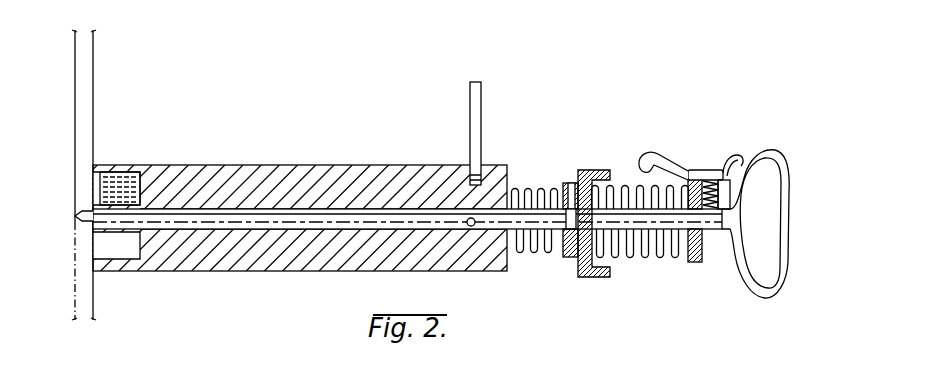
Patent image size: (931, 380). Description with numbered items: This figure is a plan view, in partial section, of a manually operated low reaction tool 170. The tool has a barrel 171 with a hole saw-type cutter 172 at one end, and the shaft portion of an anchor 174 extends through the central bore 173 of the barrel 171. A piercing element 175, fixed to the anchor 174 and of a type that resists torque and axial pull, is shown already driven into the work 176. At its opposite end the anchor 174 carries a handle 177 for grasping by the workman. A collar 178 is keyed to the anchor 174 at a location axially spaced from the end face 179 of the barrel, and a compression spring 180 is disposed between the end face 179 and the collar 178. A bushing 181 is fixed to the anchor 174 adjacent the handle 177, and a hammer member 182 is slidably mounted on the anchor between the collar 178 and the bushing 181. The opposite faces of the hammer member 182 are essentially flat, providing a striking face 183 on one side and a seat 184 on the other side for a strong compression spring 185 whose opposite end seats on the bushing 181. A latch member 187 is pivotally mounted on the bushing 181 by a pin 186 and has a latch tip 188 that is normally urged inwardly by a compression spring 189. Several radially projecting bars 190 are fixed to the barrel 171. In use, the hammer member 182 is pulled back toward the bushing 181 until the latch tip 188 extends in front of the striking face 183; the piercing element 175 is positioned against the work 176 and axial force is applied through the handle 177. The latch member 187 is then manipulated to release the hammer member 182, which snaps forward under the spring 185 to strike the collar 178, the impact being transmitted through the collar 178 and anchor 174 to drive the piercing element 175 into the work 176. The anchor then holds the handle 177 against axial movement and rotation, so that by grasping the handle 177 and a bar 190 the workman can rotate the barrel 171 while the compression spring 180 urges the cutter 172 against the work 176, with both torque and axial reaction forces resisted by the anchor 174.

The manually operated low reaction tool 170 is at (302, 163).
The barrel 171 is at (215, 268).
The hole saw-type cutter 172 is at (115, 165).
The central bore 173 is at (213, 228).
The anchor 174 is at (287, 223).
The piercing element 175 is at (76, 216).
The work 176 is at (82, 296).
The handle 177 is at (788, 182).
The collar 178 is at (566, 186).
The end face 179 is at (517, 266).
The compression spring 180 is at (524, 190).
The bushing 181 is at (702, 252).
The hammer member 182 is at (592, 277).
The striking face 183 is at (573, 260).
The seat 184 is at (611, 258).
The compression spring 185 is at (658, 256).
The pin 186 is at (708, 170).
The latch member 187 is at (656, 152).
The latch tip 188 is at (647, 163).
The compression spring 189 is at (727, 157).
The radially projecting bars 190 is at (482, 101).